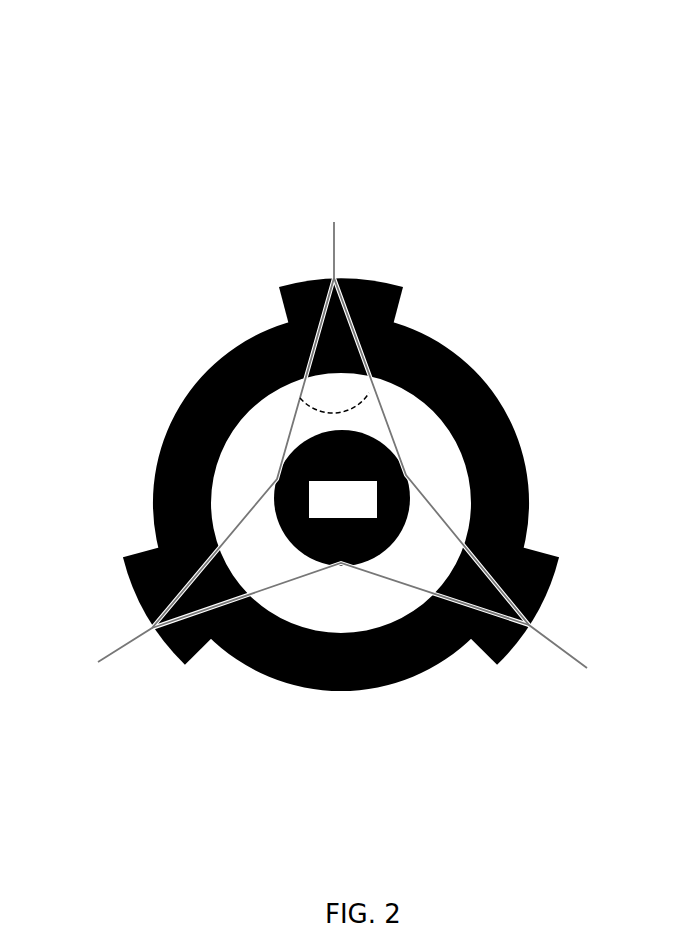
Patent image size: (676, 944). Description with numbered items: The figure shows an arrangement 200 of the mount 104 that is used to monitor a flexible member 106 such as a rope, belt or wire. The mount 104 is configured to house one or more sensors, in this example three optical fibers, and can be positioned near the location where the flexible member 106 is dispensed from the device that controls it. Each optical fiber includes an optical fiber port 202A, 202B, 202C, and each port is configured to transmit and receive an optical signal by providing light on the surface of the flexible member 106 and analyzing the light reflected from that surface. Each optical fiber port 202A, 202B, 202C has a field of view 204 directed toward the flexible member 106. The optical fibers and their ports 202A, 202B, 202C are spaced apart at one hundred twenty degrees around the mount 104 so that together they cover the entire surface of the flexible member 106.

The arrangement 200 is at (382, 28).
The mount 104 is at (336, 464).
The optical fiber port 202A is at (550, 598).
The optical fiber port 202B is at (127, 602).
The optical fiber port 202C is at (382, 283).
The flexible member 106 is at (362, 513).
The field of view 204 is at (318, 416).